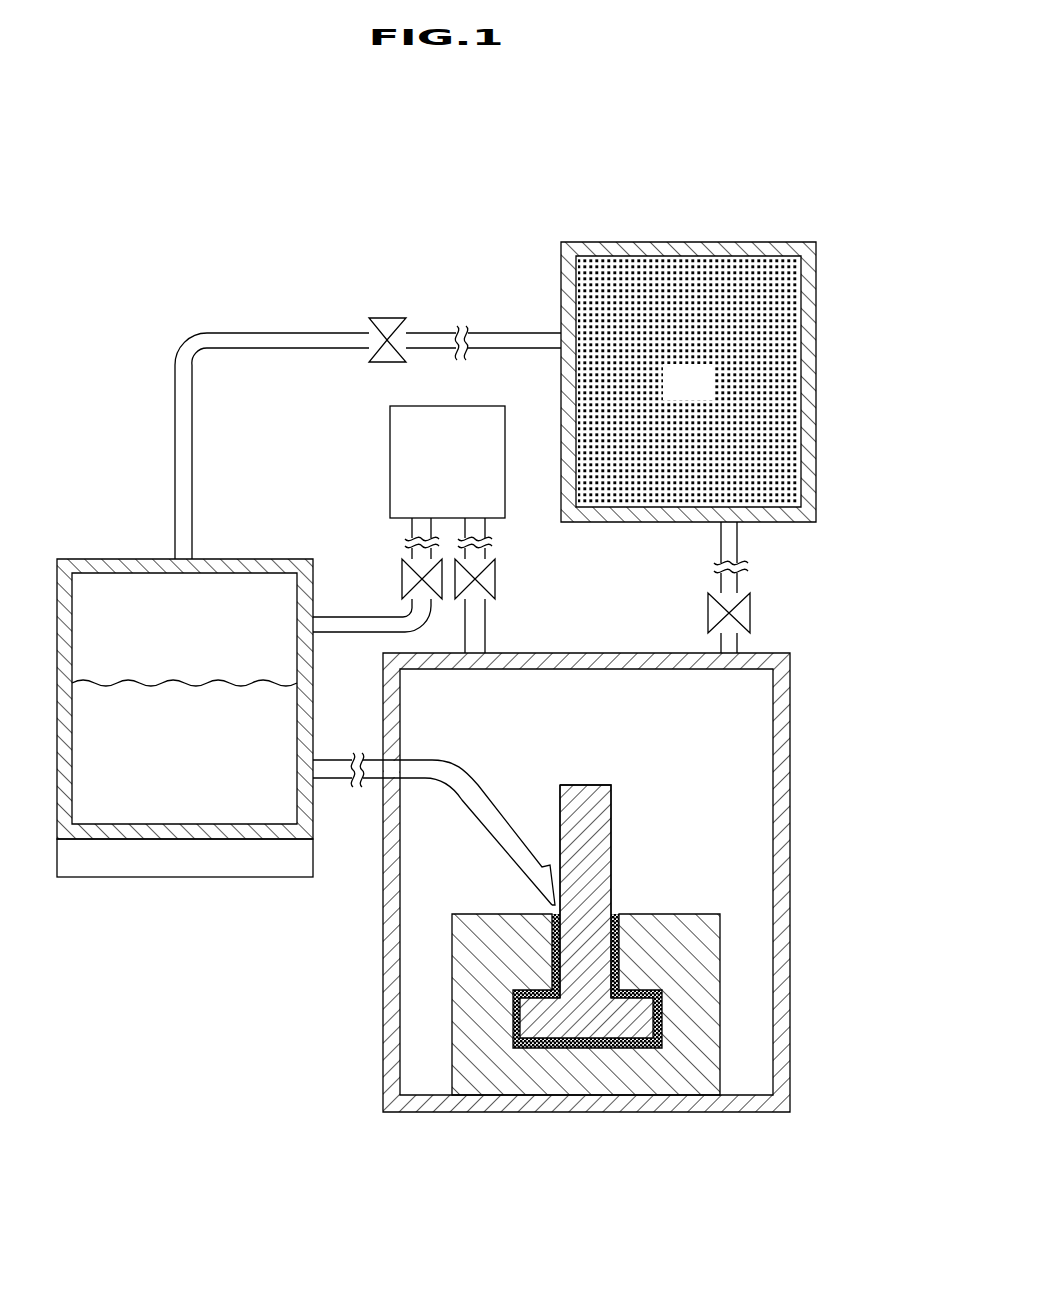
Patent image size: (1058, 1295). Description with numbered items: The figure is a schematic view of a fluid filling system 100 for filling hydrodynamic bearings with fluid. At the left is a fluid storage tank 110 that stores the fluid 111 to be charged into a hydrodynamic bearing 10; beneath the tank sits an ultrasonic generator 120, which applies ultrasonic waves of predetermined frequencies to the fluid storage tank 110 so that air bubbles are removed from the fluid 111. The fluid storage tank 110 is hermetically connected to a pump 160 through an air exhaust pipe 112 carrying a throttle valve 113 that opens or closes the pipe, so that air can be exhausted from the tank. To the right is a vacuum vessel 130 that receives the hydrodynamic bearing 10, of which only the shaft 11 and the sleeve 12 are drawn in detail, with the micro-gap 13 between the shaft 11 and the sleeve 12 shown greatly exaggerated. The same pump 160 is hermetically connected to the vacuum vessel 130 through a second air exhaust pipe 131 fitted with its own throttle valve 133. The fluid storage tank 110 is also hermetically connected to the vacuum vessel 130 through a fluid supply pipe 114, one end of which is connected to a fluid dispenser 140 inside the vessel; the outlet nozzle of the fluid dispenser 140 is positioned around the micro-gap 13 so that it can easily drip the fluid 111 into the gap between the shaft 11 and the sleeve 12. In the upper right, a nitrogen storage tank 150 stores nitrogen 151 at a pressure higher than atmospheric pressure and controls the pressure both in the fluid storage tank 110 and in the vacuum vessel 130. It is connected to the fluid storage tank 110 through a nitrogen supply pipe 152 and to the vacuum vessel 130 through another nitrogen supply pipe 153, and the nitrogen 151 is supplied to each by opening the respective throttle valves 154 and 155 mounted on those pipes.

The fluid filling system 100 is at (214, 192).
The fluid storage tank 110 is at (95, 559).
The fluid 111 is at (184, 722).
The air exhaust pipe 112 is at (352, 617).
The throttle valve 113 is at (402, 563).
The fluid supply pipe 114 is at (342, 760).
The ultrasonic generator 120 is at (185, 858).
The vacuum vessel 130 is at (428, 1112).
The air exhaust pipe 131 is at (485, 624).
The throttle valve 133 is at (496, 579).
The fluid dispenser 140 is at (540, 878).
The nitrogen storage tank 150 is at (683, 242).
The nitrogen 151 is at (688, 381).
The nitrogen supply pipe 152 is at (490, 330).
The nitrogen supply pipe 153 is at (737, 541).
The throttle valve 154 is at (387, 318).
The throttle valve 155 is at (750, 613).
The pump 160 is at (447, 462).
The hydrodynamic bearing 10 is at (604, 870).
The shaft 11 is at (611, 822).
The sleeve 12 is at (707, 914).
The micro-gap 13 is at (618, 912).